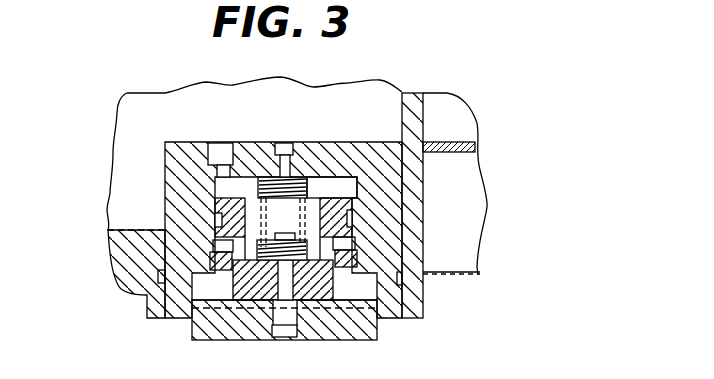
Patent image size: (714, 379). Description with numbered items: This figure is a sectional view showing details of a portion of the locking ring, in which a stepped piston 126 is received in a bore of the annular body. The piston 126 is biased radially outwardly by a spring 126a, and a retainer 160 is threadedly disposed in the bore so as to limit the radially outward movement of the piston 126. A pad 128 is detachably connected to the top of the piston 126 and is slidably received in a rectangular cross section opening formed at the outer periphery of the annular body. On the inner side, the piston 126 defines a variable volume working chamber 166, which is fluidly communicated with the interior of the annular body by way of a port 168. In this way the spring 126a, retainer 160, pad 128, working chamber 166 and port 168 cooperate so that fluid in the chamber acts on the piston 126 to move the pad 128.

The piston 126 is at (222, 235).
The spring 126a is at (310, 184).
The pad 128 is at (348, 338).
The retainer 160 is at (358, 255).
The variable volume working chamber 166 is at (228, 195).
The port 168 is at (237, 190).